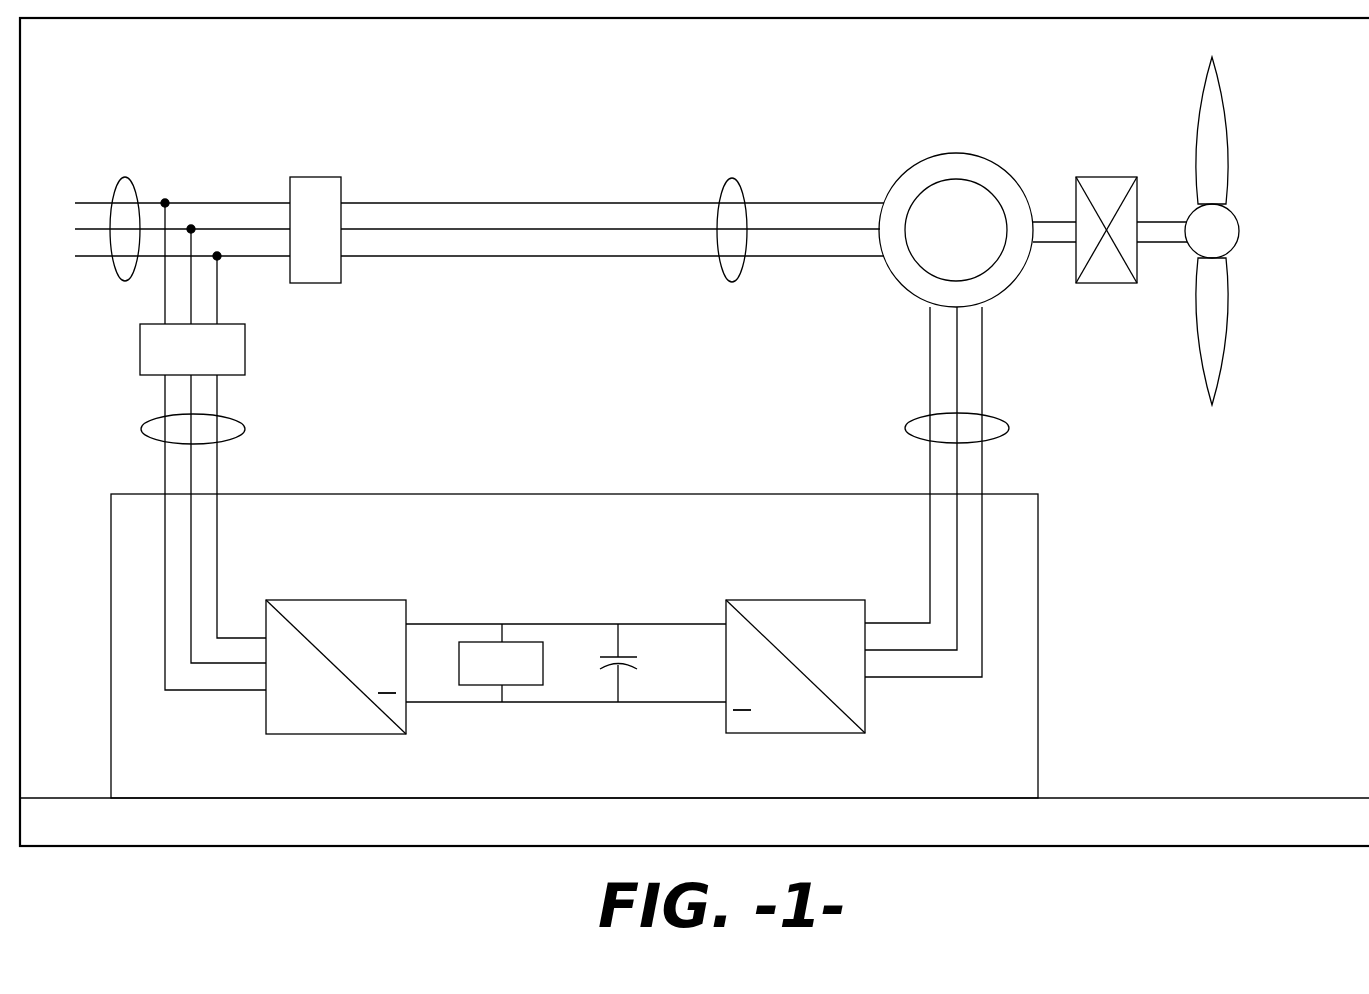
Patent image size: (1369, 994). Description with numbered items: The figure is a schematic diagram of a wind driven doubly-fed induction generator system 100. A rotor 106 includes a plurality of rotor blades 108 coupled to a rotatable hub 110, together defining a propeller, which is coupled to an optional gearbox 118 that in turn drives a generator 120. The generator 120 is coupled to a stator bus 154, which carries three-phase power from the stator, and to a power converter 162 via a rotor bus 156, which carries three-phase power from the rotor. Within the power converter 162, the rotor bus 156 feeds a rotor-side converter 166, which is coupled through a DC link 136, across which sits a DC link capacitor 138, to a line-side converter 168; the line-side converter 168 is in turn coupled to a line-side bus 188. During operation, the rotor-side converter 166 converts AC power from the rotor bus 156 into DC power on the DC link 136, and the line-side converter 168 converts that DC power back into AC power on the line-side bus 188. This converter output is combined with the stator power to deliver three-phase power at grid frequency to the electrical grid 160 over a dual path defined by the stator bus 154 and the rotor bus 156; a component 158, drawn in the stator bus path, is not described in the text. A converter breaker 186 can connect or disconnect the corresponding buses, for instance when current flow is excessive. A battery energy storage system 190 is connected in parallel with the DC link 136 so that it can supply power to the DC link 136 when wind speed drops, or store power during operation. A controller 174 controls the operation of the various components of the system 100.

The wind driven doubly-fed induction generator system 100 is at (462, 93).
The rotor 106 is at (1276, 236).
The rotor blades 108 is at (1228, 148).
The rotatable hub 110 is at (1240, 222).
The gearbox 118 is at (1108, 177).
The generator 120 is at (953, 153).
The DC link 136 is at (630, 623).
The DC link capacitor 138 is at (607, 658).
The stator bus 154 is at (734, 177).
The rotor bus 156 is at (1010, 428).
The transformer 158 is at (316, 177).
The electrical grid 160 is at (126, 177).
The power converter 162 is at (1040, 605).
The rotor-side converter 166 is at (865, 705).
The line-side converter 168 is at (266, 707).
The controller 174 is at (1105, 798).
The converter breaker 186 is at (140, 352).
The line-side bus 188 is at (143, 436).
The battery energy storage system 190 is at (473, 642).